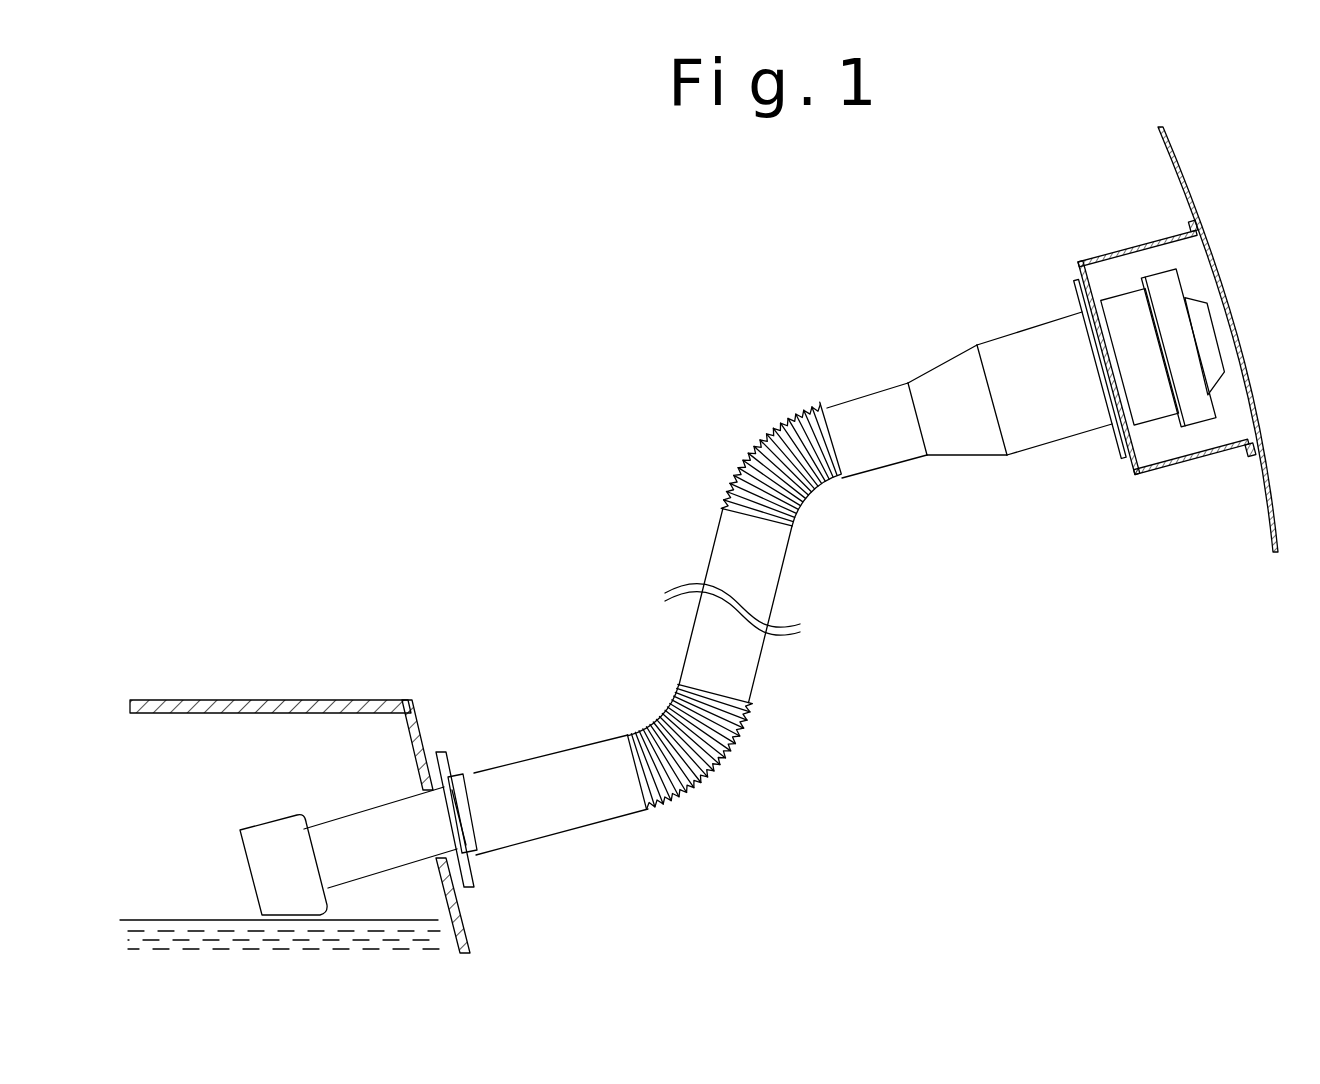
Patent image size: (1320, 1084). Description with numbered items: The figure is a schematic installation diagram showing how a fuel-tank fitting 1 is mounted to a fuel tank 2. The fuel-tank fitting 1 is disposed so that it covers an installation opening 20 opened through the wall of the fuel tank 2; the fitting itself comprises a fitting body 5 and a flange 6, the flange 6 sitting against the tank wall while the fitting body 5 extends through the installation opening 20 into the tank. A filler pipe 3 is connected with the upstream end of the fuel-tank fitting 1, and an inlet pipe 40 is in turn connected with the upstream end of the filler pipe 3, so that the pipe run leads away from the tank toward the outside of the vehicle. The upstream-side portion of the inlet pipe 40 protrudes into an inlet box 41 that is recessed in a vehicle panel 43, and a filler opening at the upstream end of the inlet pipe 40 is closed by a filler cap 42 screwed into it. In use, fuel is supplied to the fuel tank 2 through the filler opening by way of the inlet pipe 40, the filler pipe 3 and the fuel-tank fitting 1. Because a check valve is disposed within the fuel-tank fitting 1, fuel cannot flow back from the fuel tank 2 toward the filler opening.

The fuel-tank fitting 1 is at (355, 775).
The fuel tank 2 is at (272, 702).
The installation opening 20 is at (421, 787).
The filler pipe 3 is at (538, 773).
The fitting body 5 is at (372, 828).
The flange 6 is at (435, 767).
The inlet pipe 40 is at (1023, 347).
The inlet box 41 is at (1115, 253).
The filler cap 42 is at (1168, 280).
The vehicle panel 43 is at (1182, 172).